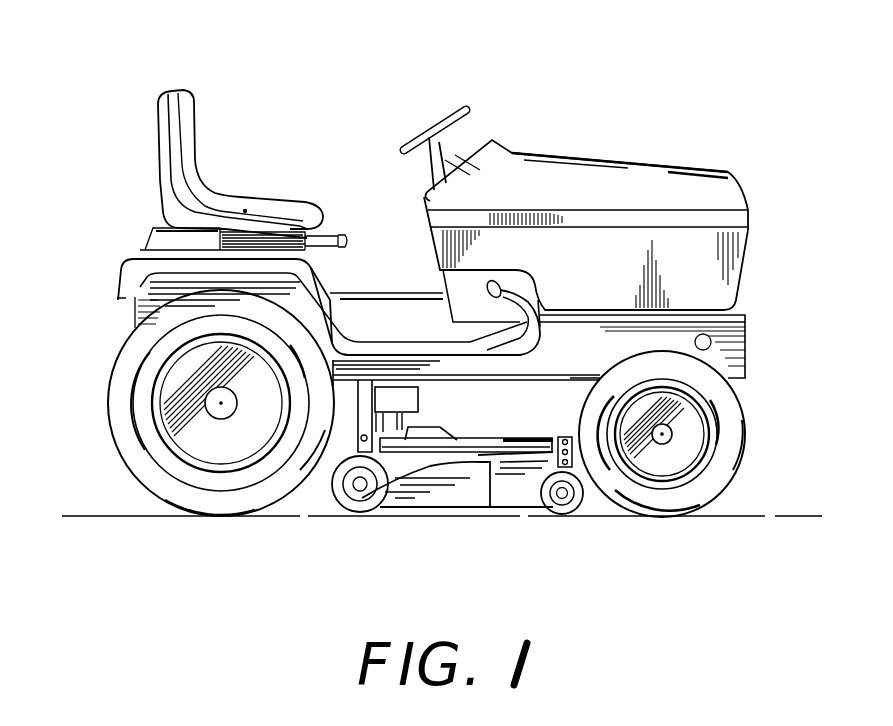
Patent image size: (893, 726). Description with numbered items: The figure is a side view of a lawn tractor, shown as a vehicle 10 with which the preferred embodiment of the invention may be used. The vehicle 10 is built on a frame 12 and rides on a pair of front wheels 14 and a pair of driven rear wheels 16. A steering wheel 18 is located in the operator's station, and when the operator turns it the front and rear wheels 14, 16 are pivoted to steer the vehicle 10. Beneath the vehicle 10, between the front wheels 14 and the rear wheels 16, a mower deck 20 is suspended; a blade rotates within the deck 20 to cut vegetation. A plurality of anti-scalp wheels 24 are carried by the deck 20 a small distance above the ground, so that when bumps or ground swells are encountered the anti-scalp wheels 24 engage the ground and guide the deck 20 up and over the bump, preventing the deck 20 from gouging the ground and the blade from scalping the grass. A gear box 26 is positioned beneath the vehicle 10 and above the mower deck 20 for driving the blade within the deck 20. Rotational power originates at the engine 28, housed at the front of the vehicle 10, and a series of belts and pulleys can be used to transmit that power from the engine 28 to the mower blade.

The vehicle 10 is at (697, 52).
The frame 12 is at (753, 358).
The front wheels 14 is at (748, 437).
The driven rear wheels 16 is at (107, 398).
The steering wheel 18 is at (455, 105).
The mower deck 20 is at (525, 508).
The anti-scalp wheels 24 is at (330, 502).
The gear box 26 is at (420, 393).
The engine 28 is at (674, 149).